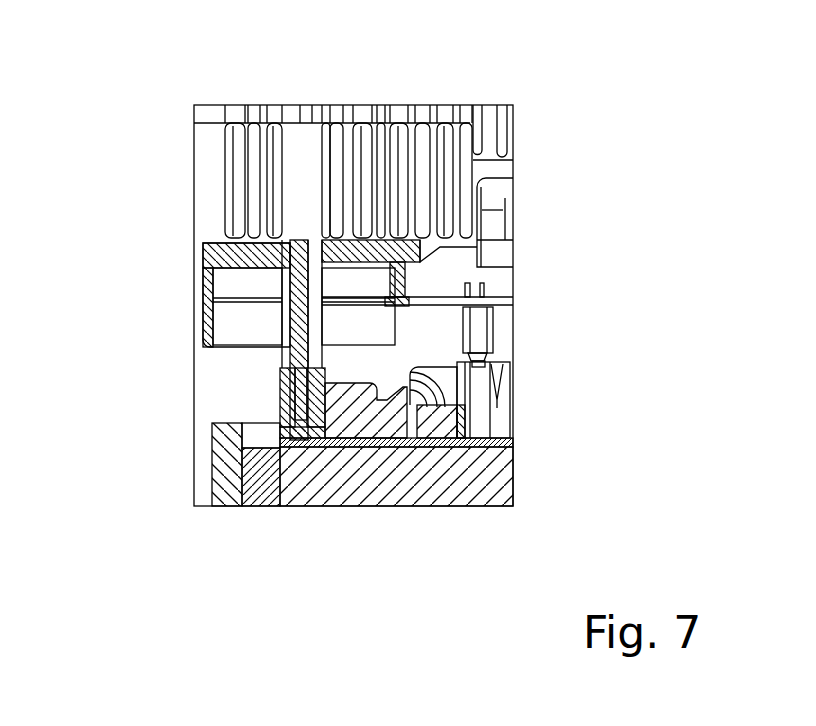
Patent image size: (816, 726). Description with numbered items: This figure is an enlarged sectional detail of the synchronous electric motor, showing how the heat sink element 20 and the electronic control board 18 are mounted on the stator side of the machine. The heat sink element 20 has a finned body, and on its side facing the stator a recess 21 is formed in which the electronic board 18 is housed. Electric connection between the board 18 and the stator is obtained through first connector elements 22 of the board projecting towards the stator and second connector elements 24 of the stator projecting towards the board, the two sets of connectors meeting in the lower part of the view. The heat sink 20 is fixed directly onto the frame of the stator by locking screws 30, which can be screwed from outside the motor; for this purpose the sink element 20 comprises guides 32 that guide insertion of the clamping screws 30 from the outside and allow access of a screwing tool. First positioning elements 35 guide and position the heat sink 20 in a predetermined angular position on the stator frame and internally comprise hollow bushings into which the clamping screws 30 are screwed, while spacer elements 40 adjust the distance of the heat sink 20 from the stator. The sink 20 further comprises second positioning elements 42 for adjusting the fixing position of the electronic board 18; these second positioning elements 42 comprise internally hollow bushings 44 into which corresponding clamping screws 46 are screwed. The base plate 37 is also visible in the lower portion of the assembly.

The electronic control board 18 is at (210, 297).
The heat sink element 20 is at (240, 127).
The recess 21 is at (215, 324).
The first connector elements 22 is at (487, 328).
The second connector elements 24 is at (483, 391).
The locking screws 30 is at (270, 258).
The guides 32 is at (297, 178).
The first positioning elements 35 is at (268, 397).
The base plate 37 is at (322, 437).
The spacer elements 40 is at (287, 310).
The second positioning elements 42 is at (440, 251).
The hollow bushings 44 is at (410, 279).
The clamping screws 46 is at (398, 310).